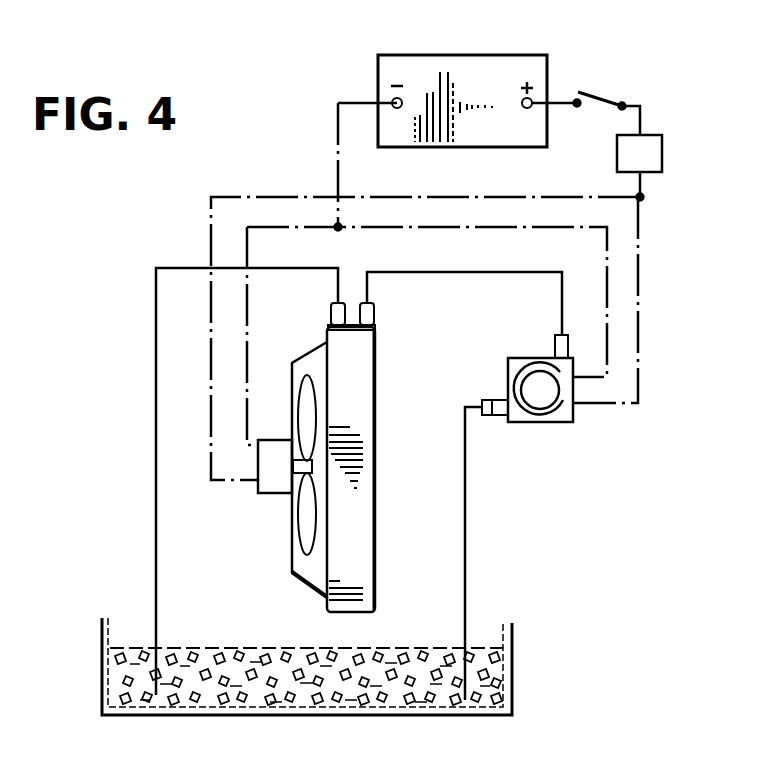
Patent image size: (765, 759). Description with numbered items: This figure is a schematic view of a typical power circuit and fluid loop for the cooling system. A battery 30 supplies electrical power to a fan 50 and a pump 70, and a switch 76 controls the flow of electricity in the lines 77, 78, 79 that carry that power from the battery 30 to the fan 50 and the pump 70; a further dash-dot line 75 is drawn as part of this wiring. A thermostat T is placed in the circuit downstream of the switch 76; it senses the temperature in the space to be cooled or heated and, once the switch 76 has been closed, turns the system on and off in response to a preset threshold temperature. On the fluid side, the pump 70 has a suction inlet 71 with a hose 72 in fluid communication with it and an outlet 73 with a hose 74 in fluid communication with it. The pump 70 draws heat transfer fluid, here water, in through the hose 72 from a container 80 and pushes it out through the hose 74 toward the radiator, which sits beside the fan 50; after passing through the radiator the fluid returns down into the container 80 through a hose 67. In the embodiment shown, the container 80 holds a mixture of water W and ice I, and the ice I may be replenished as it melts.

The battery 30 is at (470, 68).
The switch 76 is at (607, 98).
The thermostat T is at (663, 152).
The line 77 is at (640, 183).
The line 78 is at (520, 197).
The line 79 is at (337, 152).
The electrical lead 75 is at (418, 228).
The hose 74 is at (485, 273).
The outlet 73 is at (553, 345).
The pump 70 is at (565, 423).
The suction inlet 71 is at (498, 417).
The hose 72 is at (465, 557).
The hose 67 is at (157, 342).
The fan 50 is at (308, 523).
The container 80 is at (102, 672).
The ice I is at (245, 650).
The water W is at (512, 690).